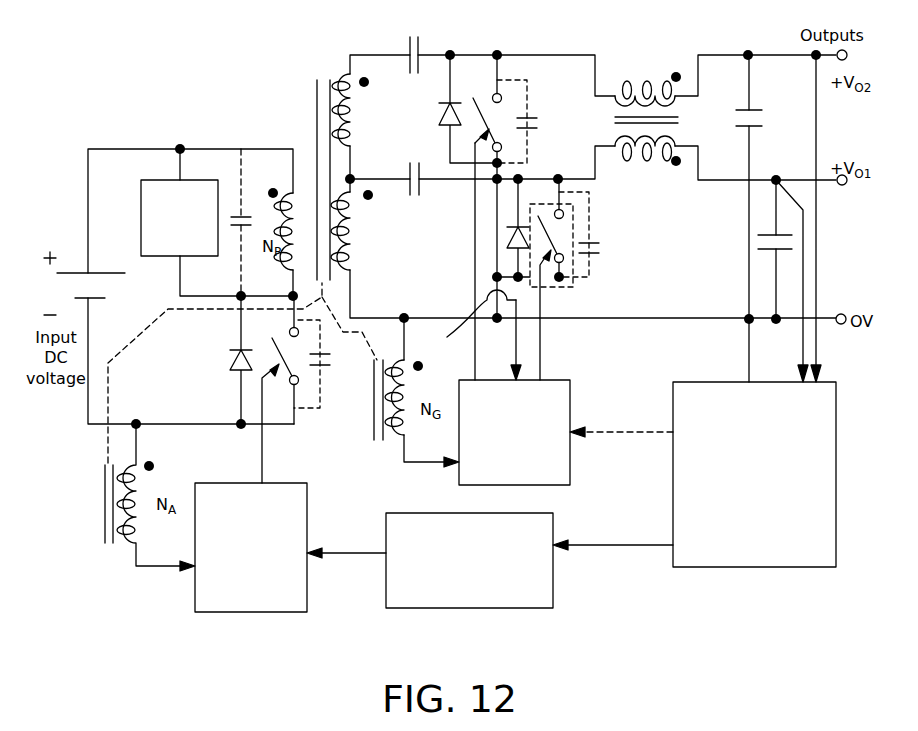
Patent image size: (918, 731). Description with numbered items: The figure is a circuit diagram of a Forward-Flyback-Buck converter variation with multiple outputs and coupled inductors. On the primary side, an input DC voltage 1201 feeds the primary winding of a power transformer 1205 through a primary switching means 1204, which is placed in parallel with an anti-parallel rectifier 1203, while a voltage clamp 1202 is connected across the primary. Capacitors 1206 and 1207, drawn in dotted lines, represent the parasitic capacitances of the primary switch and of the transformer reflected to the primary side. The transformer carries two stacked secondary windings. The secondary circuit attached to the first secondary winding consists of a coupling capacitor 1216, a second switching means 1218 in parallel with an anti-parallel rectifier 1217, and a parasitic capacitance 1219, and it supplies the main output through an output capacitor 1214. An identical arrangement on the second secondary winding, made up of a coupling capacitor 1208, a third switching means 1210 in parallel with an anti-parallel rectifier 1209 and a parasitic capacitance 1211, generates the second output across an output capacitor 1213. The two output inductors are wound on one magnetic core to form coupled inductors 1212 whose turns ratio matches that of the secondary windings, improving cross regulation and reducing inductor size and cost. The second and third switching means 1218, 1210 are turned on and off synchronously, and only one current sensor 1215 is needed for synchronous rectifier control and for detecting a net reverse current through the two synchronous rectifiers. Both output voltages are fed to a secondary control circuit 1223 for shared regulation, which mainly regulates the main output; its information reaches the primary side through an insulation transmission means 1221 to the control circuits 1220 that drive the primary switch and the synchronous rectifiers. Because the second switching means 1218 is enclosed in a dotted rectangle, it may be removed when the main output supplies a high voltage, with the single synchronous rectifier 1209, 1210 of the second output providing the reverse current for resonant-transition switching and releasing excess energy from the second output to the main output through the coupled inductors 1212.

The input DC voltage 1201 is at (76, 262).
The voltage clamp 1202 is at (193, 182).
The anti-parallel rectifier 1203 is at (232, 368).
The primary switching means 1204 is at (298, 368).
The power transformer 1205 is at (324, 78).
The parasitic capacitance of the primary switching means 1206 is at (238, 230).
The parasitic capacitance of the transformer 1207 is at (330, 368).
The coupling capacitor 1208 is at (415, 36).
The anti-parallel rectifier 1209 is at (440, 118).
The third switching means 1210 is at (498, 125).
The parasitic capacitance of the third switching means 1211 is at (537, 126).
The coupled inductors 1212 is at (641, 82).
The output capacitor 1213 is at (770, 118).
The output capacitor 1214 is at (758, 243).
The current sensor 1215 is at (478, 319).
The coupling capacitor 1216 is at (421, 188).
The anti-parallel rectifier 1217 is at (505, 245).
The second switching means 1218 is at (562, 240).
The parasitic capacitance of the second switching means 1219 is at (605, 248).
The control circuit 1220 is at (570, 480).
The insulation transmission means 1221 is at (553, 603).
The secondary control circuit 1223 is at (748, 567).